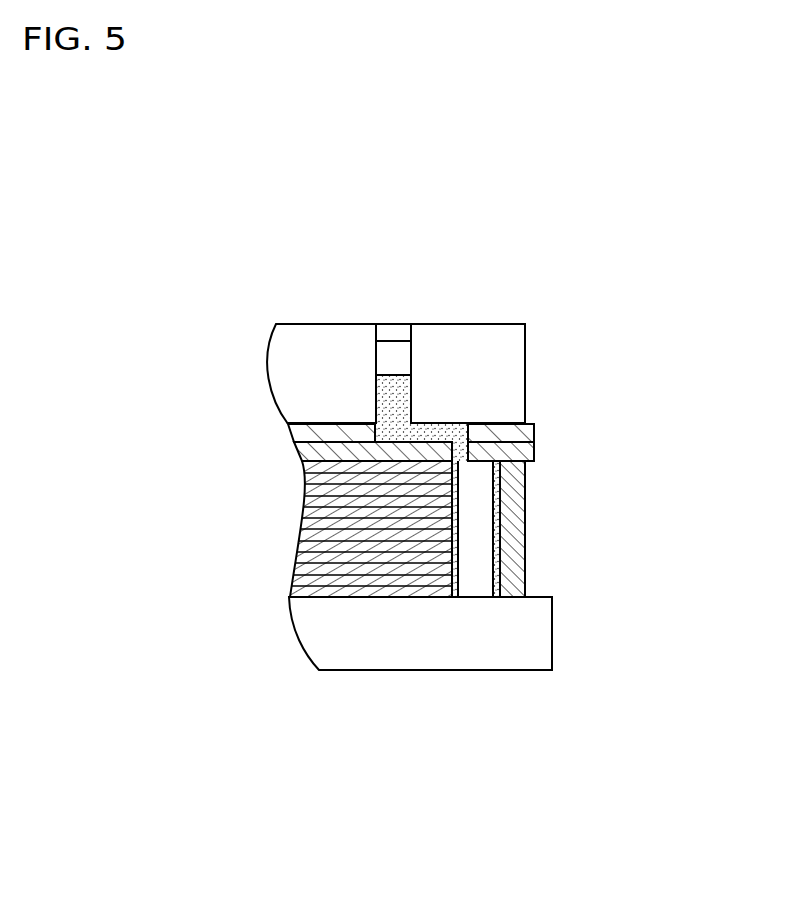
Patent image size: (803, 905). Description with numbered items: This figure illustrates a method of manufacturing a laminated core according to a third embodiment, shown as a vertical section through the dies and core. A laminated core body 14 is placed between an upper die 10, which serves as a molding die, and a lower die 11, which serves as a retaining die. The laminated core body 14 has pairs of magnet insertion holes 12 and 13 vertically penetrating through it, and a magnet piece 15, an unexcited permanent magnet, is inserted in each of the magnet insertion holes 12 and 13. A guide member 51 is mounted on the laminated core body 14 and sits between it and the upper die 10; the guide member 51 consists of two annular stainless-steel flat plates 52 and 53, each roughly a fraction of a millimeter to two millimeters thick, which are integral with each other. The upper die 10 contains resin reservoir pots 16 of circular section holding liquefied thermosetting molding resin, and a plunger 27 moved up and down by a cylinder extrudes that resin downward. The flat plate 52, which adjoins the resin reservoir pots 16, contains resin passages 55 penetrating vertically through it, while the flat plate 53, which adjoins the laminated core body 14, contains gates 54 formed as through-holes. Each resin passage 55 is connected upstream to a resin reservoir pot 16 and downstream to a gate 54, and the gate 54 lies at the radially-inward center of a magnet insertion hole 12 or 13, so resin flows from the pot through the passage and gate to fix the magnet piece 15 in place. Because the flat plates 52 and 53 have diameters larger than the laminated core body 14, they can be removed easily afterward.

The upper die 10 is at (530, 378).
The lower die 11 is at (557, 635).
The magnet insertion hole 12 is at (394, 621).
The magnet insertion hole 13 is at (440, 592).
The laminated core body 14 is at (473, 621).
The magnet piece 15 is at (480, 583).
The resin reservoir pot 16 is at (377, 400).
The plunger 27 is at (400, 355).
The guide member 51 is at (499, 447).
The flat plate 52 is at (535, 431).
The flat plate 53 is at (535, 453).
The gate 54 is at (525, 498).
The resin passage 55 is at (440, 428).